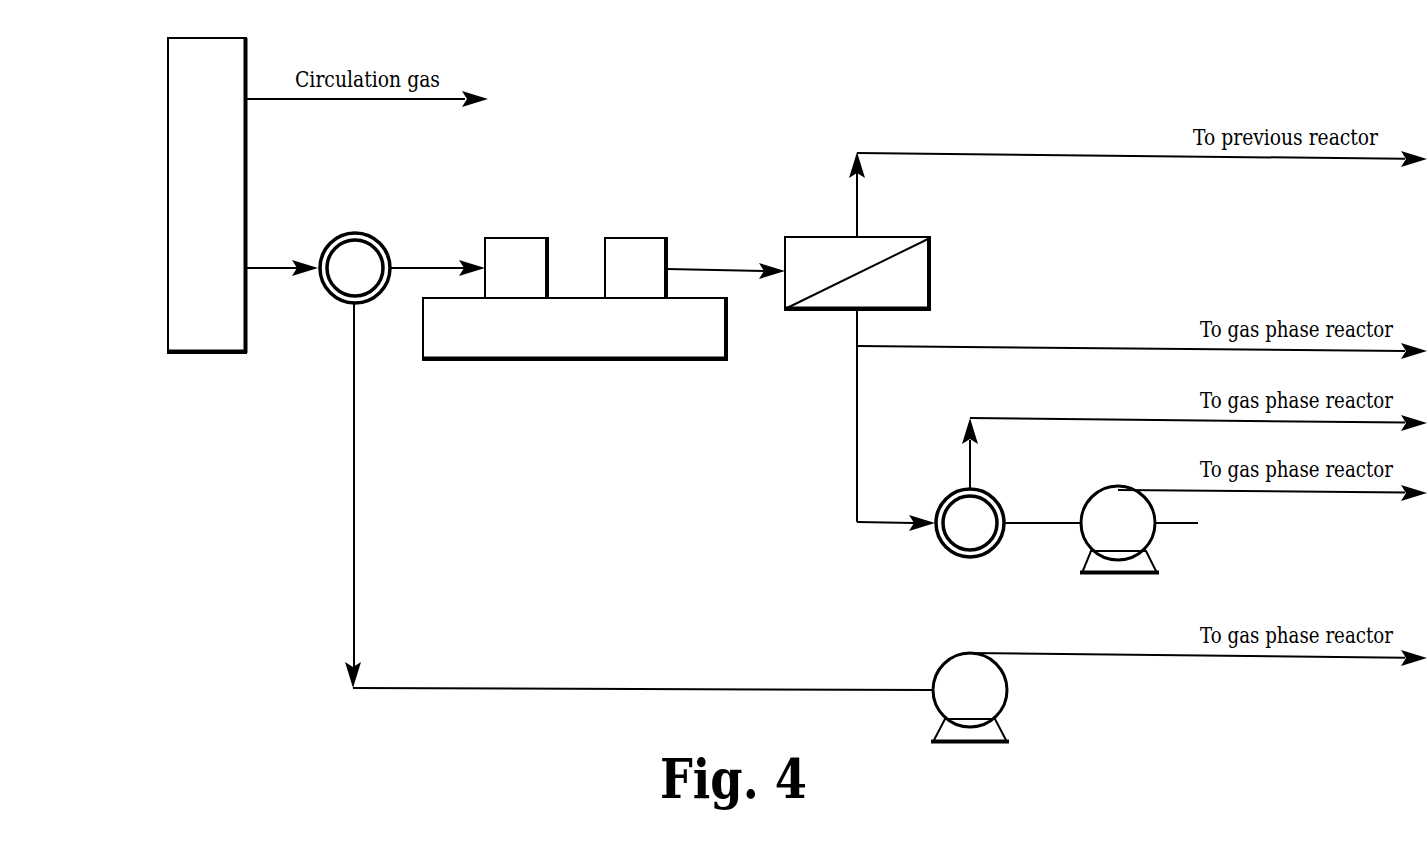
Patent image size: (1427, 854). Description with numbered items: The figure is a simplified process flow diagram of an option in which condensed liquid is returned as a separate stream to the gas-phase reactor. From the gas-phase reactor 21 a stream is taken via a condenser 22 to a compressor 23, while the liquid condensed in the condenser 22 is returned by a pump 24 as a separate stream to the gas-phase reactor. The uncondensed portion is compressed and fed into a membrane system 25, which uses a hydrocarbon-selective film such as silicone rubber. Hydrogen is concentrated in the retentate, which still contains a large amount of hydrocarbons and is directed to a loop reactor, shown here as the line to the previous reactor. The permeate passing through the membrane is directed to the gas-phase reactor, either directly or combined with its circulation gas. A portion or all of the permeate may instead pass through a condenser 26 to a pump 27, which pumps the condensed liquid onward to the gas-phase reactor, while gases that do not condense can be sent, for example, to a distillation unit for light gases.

The gas-phase reactor 21 is at (226, 144).
The condenser 22 is at (347, 230).
The compressor 23 is at (579, 307).
The pump 24 is at (1005, 700).
The membrane system 25 is at (805, 240).
The condenser 26 is at (955, 558).
The pump 27 is at (1253, 529).